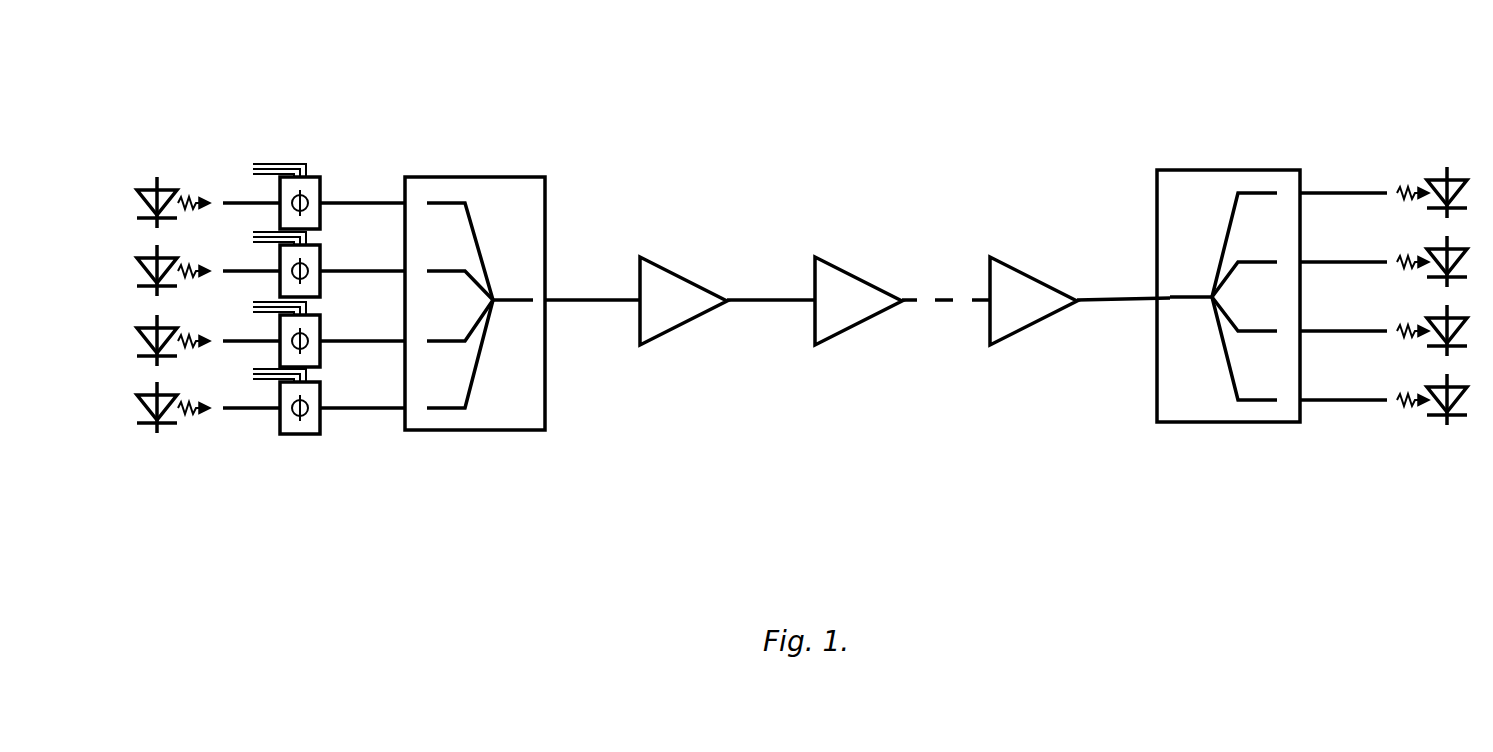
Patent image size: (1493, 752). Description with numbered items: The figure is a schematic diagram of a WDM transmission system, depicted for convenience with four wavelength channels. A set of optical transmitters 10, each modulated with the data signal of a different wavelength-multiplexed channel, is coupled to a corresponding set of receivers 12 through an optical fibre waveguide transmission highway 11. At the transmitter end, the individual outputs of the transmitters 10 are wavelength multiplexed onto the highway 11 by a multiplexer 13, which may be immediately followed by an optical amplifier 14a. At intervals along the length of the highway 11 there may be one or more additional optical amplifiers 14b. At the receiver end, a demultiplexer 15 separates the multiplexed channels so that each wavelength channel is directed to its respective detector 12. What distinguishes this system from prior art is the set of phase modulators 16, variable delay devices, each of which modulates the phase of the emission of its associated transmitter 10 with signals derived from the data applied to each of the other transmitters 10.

The optical transmitters 10 is at (158, 258).
The phase modulators 16 is at (312, 288).
The multiplexer 13 is at (501, 215).
The optical fibre waveguide transmission highway 11 is at (750, 297).
The optical amplifier 14a is at (663, 323).
The additional optical amplifiers 14b is at (838, 322).
The demultiplexer 15 is at (1189, 215).
The receivers 12 is at (1445, 252).